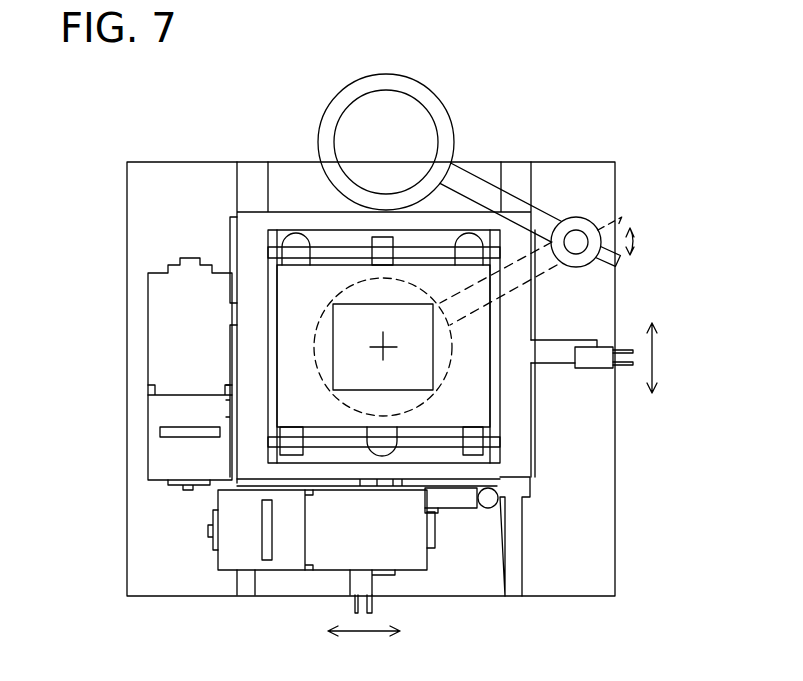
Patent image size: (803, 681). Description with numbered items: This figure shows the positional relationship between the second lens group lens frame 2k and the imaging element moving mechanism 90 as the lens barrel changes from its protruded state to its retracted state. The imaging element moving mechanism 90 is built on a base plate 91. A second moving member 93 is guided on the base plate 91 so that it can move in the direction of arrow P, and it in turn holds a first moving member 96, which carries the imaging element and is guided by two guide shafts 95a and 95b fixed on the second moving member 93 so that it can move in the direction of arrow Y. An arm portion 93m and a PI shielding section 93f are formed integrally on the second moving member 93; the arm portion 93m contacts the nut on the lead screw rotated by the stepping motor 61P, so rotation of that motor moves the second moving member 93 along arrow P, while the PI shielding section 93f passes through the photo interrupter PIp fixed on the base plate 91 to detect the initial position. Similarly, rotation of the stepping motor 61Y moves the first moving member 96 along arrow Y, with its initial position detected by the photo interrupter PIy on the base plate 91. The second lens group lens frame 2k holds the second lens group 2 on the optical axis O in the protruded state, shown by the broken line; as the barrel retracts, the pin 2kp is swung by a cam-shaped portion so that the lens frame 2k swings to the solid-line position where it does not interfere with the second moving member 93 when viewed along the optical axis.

The imaging element moving mechanism 90 is at (92, 186).
The base plate 91 is at (563, 585).
The second moving member 93 is at (517, 453).
The PI shielding section 93f is at (562, 348).
The arm portion 93m is at (237, 312).
The guide shaft 95a is at (320, 250).
The guide shaft 95b is at (442, 442).
The first moving member 96 is at (465, 402).
The second lens group 2 is at (397, 122).
The second lens group lens frame 2k is at (384, 82).
The pin 2kp is at (617, 263).
The optical axis O is at (383, 345).
The photo interrupter PIp is at (597, 365).
The photo interrupter PIy is at (370, 588).
The arrow P is at (661, 358).
The arrow Y is at (364, 646).
The stepping motor 61P is at (157, 458).
The stepping motor 61Y is at (235, 562).